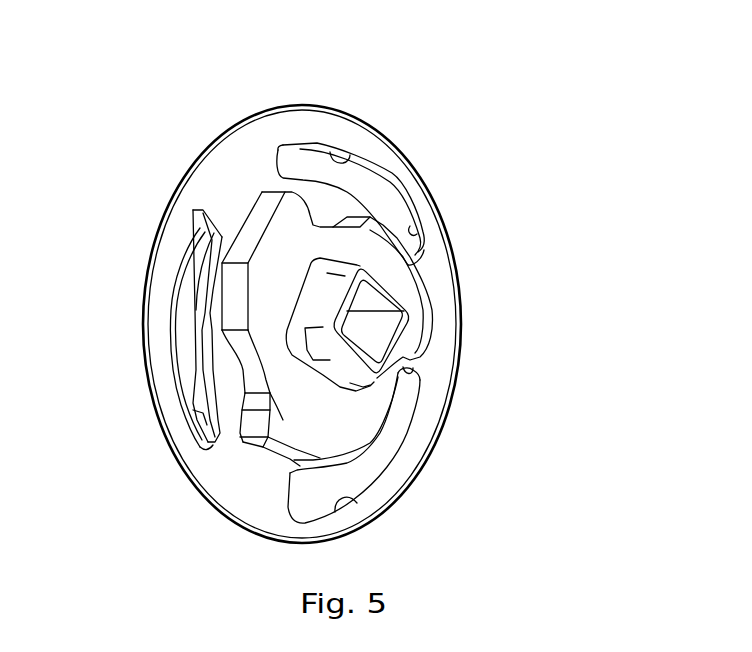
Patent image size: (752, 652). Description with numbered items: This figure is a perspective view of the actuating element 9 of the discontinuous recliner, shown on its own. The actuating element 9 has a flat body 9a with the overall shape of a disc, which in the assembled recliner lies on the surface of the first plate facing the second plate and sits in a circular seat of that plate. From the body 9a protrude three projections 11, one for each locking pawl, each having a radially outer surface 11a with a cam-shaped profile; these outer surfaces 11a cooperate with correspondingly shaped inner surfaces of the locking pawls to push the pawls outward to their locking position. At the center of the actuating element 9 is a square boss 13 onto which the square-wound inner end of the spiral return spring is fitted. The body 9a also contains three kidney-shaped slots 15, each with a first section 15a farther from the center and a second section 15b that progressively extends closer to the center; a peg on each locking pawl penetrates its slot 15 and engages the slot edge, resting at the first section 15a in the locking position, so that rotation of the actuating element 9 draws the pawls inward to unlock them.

The actuating element 9 is at (578, 140).
The flat body 9a is at (260, 133).
The projection 11 is at (272, 242).
The outer surface 11a is at (177, 273).
The square boss 13 is at (320, 303).
The kidney-shaped slot 15 is at (400, 165).
The first section 15a is at (180, 241).
The second section 15b is at (360, 160).